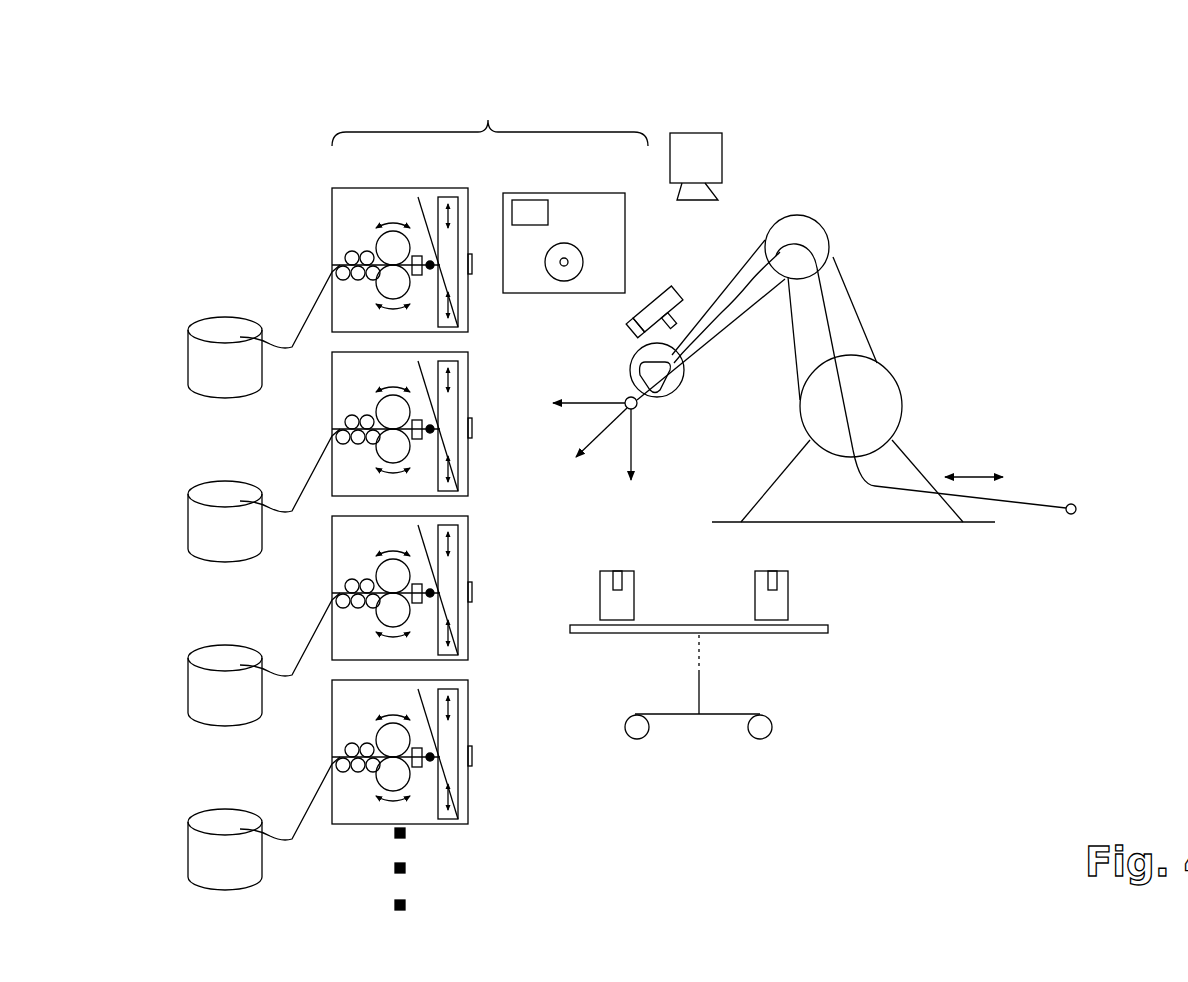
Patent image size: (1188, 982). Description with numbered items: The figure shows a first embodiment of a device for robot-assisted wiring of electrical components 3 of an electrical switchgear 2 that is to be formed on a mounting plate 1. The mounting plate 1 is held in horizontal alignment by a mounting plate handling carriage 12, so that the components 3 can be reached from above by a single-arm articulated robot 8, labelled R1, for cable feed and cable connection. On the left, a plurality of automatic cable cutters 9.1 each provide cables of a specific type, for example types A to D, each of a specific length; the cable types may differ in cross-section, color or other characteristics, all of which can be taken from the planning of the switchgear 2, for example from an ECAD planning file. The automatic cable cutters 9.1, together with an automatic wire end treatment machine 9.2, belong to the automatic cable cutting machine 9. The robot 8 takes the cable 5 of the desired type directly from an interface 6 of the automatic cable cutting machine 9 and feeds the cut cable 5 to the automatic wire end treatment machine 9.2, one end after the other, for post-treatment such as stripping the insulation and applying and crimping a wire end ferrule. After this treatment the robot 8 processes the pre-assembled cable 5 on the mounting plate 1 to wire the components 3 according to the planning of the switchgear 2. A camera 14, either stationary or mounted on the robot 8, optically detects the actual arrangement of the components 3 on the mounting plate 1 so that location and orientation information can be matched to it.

The mounting plate 1 is at (828, 629).
The electrical switchgear 2 is at (726, 629).
The electrical components 3 is at (617, 600).
The cable 5 is at (258, 332).
The interface 6 is at (470, 264).
The single-arm articulated robot 8 is at (866, 222).
The automatic cable cutting machine 9 is at (490, 498).
The automatic cable cutters 9.1 is at (393, 205).
The automatic wire end treatment machine 9.2 is at (580, 200).
The mounting plate handling carriage 12 is at (733, 712).
The camera 14 is at (705, 158).
The robot R1 is at (854, 502).